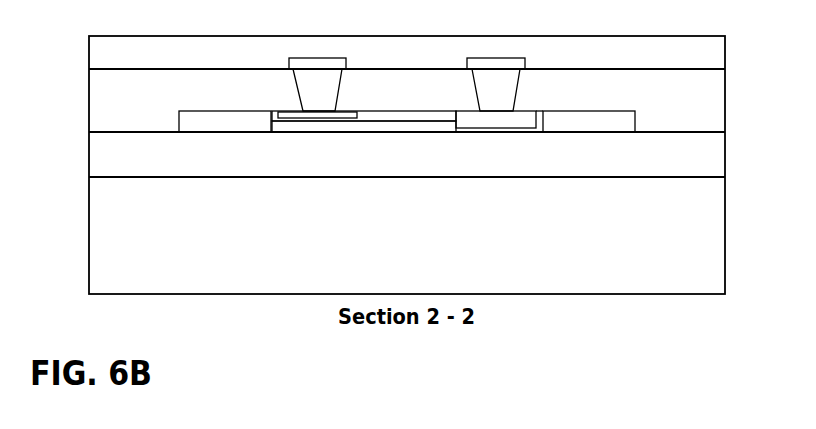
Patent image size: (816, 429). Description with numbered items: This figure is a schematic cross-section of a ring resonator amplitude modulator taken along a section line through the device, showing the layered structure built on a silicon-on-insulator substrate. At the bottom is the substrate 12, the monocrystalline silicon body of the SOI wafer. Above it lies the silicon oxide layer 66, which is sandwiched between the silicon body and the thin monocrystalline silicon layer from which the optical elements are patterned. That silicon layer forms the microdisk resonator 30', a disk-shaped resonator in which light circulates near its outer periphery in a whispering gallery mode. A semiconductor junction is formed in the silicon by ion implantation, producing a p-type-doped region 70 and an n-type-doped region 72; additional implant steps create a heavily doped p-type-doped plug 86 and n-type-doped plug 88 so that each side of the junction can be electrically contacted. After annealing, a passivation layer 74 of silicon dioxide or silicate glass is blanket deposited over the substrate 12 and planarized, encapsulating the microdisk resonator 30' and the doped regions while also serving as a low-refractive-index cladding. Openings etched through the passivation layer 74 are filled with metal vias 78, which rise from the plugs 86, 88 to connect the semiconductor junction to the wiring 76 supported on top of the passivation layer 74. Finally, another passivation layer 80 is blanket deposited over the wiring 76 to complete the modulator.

The substrate 12 is at (134, 268).
The silicon oxide layer 66 is at (134, 161).
The passivation layer 74 is at (134, 113).
The passivation layer 80 is at (141, 61).
The microdisk resonator 30' is at (221, 105).
The p-type-doped region 70 is at (392, 112).
The n-type-doped region 72 is at (393, 127).
The p-type-doped plug 86 is at (285, 107).
The n-type-doped plug 88 is at (528, 110).
The wiring 76 is at (468, 61).
The metal vias 78 is at (330, 98).